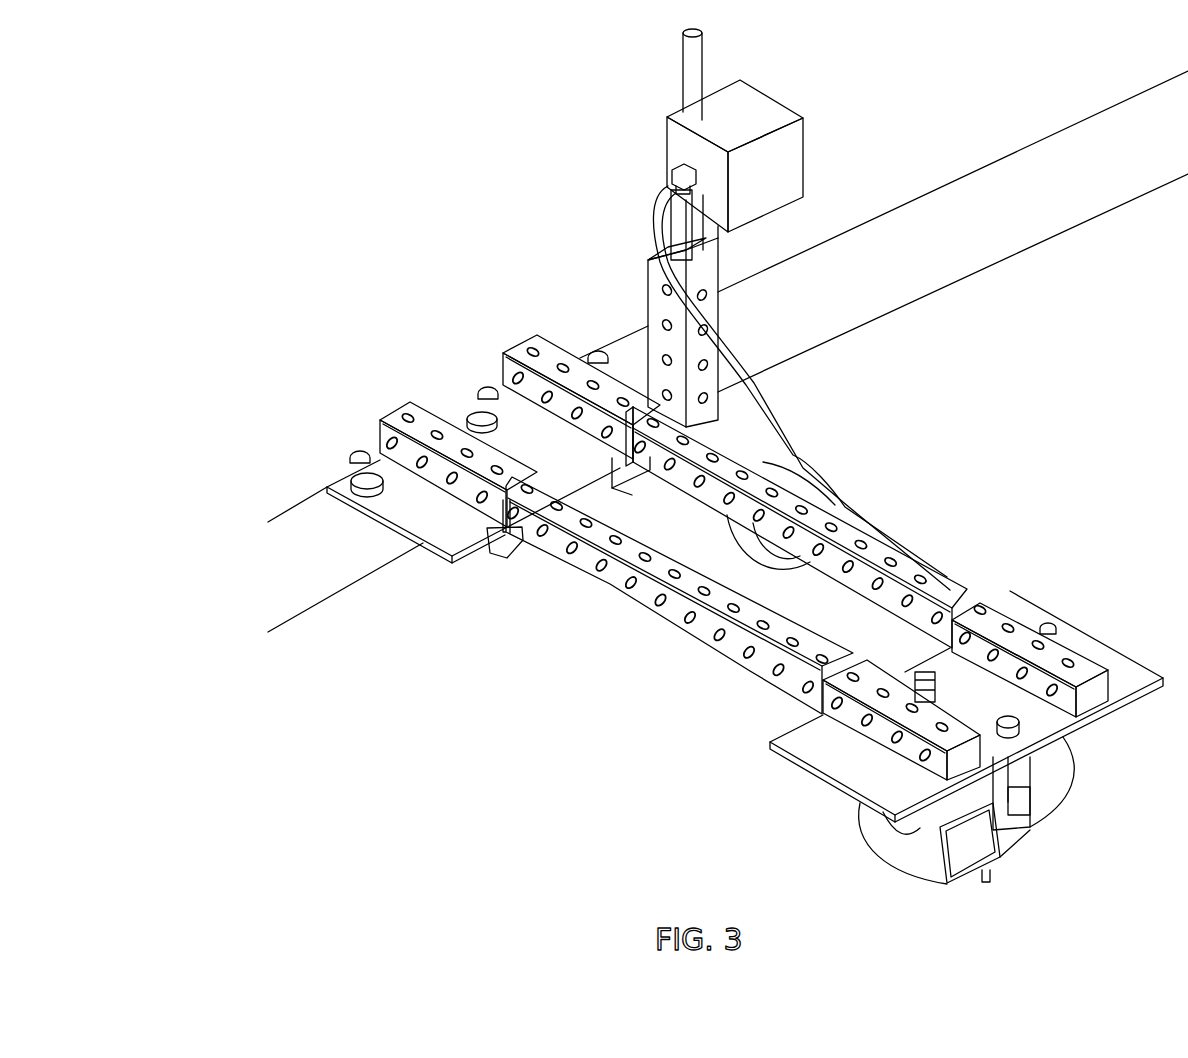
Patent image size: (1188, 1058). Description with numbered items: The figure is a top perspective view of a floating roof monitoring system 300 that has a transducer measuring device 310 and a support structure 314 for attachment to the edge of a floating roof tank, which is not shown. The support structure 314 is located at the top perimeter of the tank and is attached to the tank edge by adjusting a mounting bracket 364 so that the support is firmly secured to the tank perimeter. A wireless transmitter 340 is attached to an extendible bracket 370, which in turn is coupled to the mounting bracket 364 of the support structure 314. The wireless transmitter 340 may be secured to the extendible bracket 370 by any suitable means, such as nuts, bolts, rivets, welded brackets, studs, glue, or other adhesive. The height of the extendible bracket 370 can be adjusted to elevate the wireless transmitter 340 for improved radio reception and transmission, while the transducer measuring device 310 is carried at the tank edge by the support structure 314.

The floating roof monitoring system 300 is at (197, 157).
The transducer measuring device 310 is at (1055, 766).
The support structure 314 is at (603, 600).
The wireless transmitter 340 is at (762, 118).
The mounting bracket 364 is at (527, 428).
The extendible bracket 370 is at (660, 318).